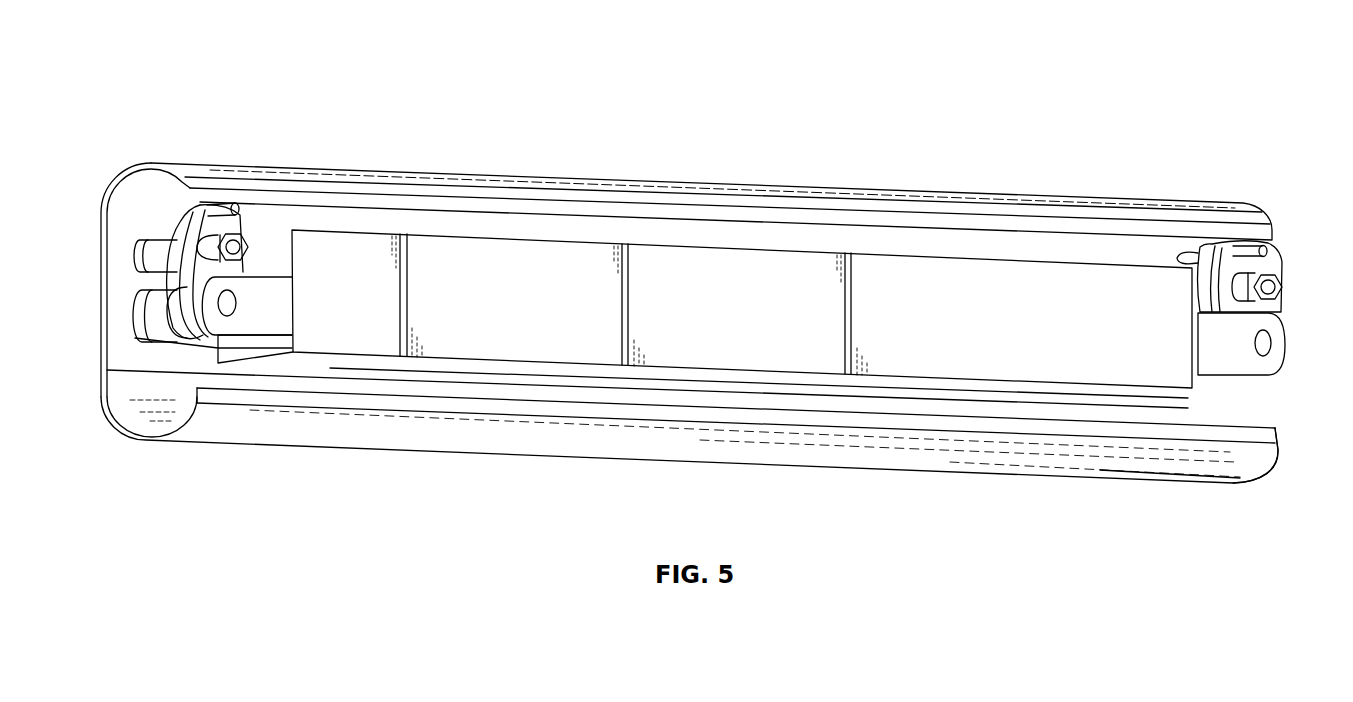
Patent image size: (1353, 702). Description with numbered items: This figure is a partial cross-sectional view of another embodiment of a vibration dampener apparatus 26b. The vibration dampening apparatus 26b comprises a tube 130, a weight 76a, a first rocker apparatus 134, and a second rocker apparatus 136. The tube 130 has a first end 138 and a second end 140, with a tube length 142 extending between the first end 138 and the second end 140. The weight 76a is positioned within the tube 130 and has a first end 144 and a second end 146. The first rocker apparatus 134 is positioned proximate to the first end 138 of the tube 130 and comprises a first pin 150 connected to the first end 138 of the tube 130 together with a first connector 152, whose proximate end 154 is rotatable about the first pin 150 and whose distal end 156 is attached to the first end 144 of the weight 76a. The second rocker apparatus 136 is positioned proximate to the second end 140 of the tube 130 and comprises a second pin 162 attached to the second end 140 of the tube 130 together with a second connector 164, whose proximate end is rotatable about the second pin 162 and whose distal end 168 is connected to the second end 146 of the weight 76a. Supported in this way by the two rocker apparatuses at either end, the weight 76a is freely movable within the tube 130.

The vibration dampener apparatus 26b is at (1240, 97).
The weight 76a is at (725, 245).
The tube 130 is at (882, 478).
The first rocker apparatus 134 is at (148, 247).
The second rocker apparatus 136 is at (1270, 260).
The first end 138 is at (210, 443).
The second end 140 is at (1150, 485).
The tube length 142 is at (505, 452).
The first end 144 is at (317, 243).
The second end 146 is at (1140, 262).
The first pin 150 is at (138, 262).
The first connector 152 is at (147, 313).
The proximate end 154 is at (168, 205).
The distal end 156 is at (152, 340).
The second pin 162 is at (1268, 287).
The second connector 164 is at (1282, 314).
The distal end 168 is at (1263, 343).